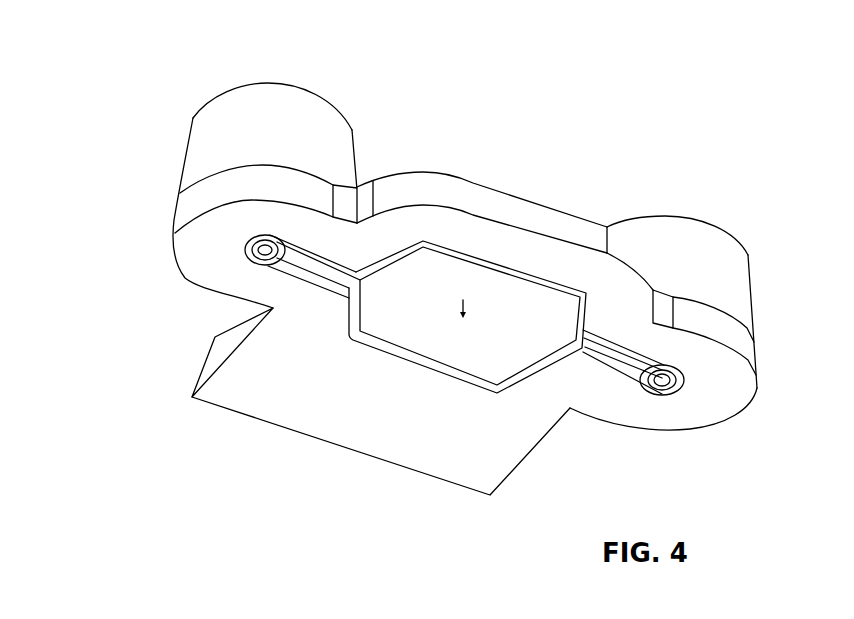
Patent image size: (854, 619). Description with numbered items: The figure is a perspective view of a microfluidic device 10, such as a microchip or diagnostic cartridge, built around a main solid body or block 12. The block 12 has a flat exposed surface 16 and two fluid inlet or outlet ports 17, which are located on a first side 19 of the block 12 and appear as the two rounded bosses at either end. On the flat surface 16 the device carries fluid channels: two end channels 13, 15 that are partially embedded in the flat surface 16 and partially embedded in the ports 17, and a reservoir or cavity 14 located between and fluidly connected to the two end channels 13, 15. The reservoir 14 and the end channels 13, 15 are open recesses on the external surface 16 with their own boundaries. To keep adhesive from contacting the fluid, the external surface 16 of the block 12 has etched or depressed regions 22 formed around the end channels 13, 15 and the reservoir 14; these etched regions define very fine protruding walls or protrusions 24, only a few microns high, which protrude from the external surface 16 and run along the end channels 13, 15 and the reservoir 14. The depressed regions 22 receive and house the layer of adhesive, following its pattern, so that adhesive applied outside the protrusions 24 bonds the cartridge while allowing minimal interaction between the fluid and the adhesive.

The microfluidic device 10 is at (751, 146).
The main solid body 12 is at (548, 190).
The end channel 13 is at (264, 257).
The reservoir 14 is at (525, 345).
The end channel 15 is at (668, 385).
The flat surface 16 is at (497, 410).
The fluid inlet or outlet port 17 is at (203, 140).
The first side 19 is at (457, 180).
The etched or depressed region 22 is at (428, 226).
The protrusion 24 is at (403, 358).